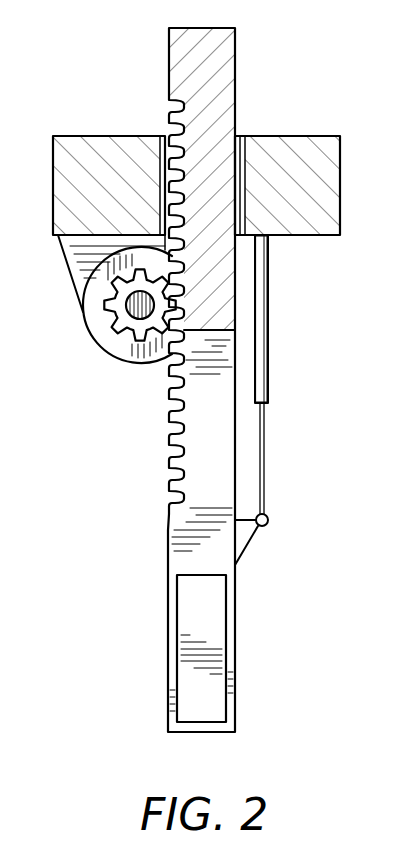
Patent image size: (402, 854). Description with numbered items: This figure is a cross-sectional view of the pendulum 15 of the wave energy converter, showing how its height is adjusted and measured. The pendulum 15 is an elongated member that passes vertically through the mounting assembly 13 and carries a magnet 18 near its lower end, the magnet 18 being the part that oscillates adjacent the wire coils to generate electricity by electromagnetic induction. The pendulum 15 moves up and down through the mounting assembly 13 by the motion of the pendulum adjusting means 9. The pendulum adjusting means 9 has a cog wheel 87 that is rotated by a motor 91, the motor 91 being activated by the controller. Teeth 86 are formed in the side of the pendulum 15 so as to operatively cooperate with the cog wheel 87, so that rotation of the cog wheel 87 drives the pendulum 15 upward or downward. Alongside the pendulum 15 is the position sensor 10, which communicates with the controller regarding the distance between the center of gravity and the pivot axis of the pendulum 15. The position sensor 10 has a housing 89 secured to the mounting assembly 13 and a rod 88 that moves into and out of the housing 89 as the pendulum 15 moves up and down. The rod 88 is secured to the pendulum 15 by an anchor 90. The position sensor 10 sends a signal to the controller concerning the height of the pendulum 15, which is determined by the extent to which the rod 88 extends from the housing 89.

The pendulum 15 is at (170, 54).
The mounting assembly 13 is at (323, 136).
The motor 91 is at (84, 324).
The pendulum adjusting means 9 is at (108, 357).
The cog wheel 87 is at (135, 341).
The position sensor 10 is at (266, 320).
The housing 89 is at (262, 368).
The rod 88 is at (262, 451).
The anchor 90 is at (268, 527).
The teeth 86 is at (168, 481).
The magnet 18 is at (217, 642).